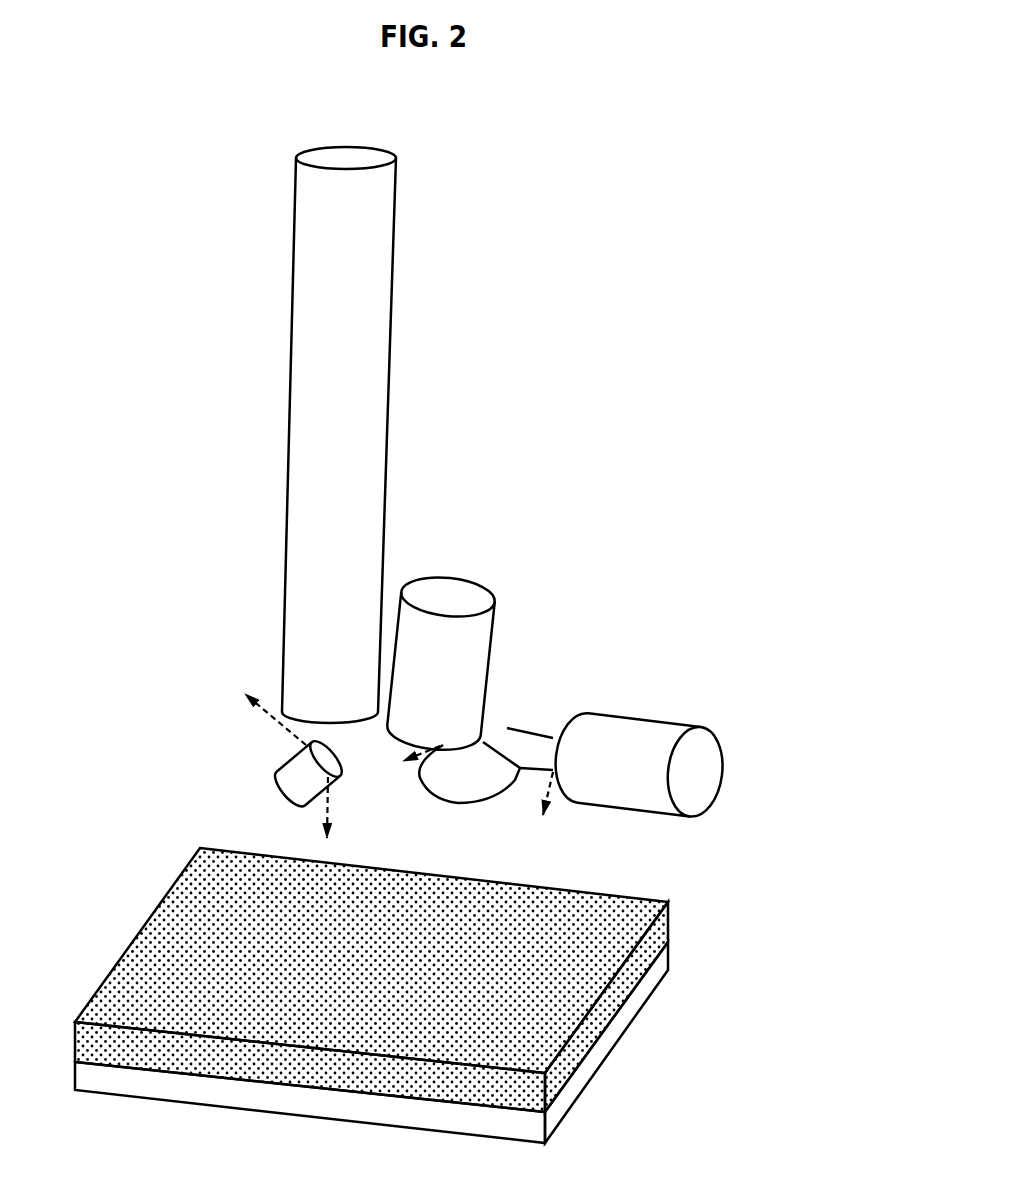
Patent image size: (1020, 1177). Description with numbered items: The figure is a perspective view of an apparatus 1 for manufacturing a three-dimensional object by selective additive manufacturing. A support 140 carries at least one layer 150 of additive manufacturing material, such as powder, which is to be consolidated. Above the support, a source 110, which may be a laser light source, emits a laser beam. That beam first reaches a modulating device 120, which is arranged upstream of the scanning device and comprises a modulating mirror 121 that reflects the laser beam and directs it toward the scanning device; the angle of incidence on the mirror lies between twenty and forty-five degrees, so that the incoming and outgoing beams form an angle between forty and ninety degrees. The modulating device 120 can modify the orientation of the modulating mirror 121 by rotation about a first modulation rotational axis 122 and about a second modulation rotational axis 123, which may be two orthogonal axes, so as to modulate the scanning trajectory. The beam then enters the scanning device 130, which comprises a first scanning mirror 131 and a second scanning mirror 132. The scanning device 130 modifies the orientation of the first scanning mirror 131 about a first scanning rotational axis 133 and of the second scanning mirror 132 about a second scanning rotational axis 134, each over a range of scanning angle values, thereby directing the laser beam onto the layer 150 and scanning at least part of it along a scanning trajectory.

The apparatus 1 is at (637, 391).
The source 110 is at (207, 410).
The modulating device 120 is at (294, 777).
The modulating mirror 121 is at (326, 758).
The first modulation rotational axis 122 is at (272, 718).
The second modulation rotational axis 123 is at (332, 798).
The scanning device 130 is at (587, 716).
The first scanning mirror 131 is at (480, 779).
The second scanning mirror 132 is at (527, 748).
The first scanning rotational axis 133 is at (416, 758).
The second scanning rotational axis 134 is at (550, 798).
The support 140 is at (607, 1010).
The layer 150 is at (607, 1040).